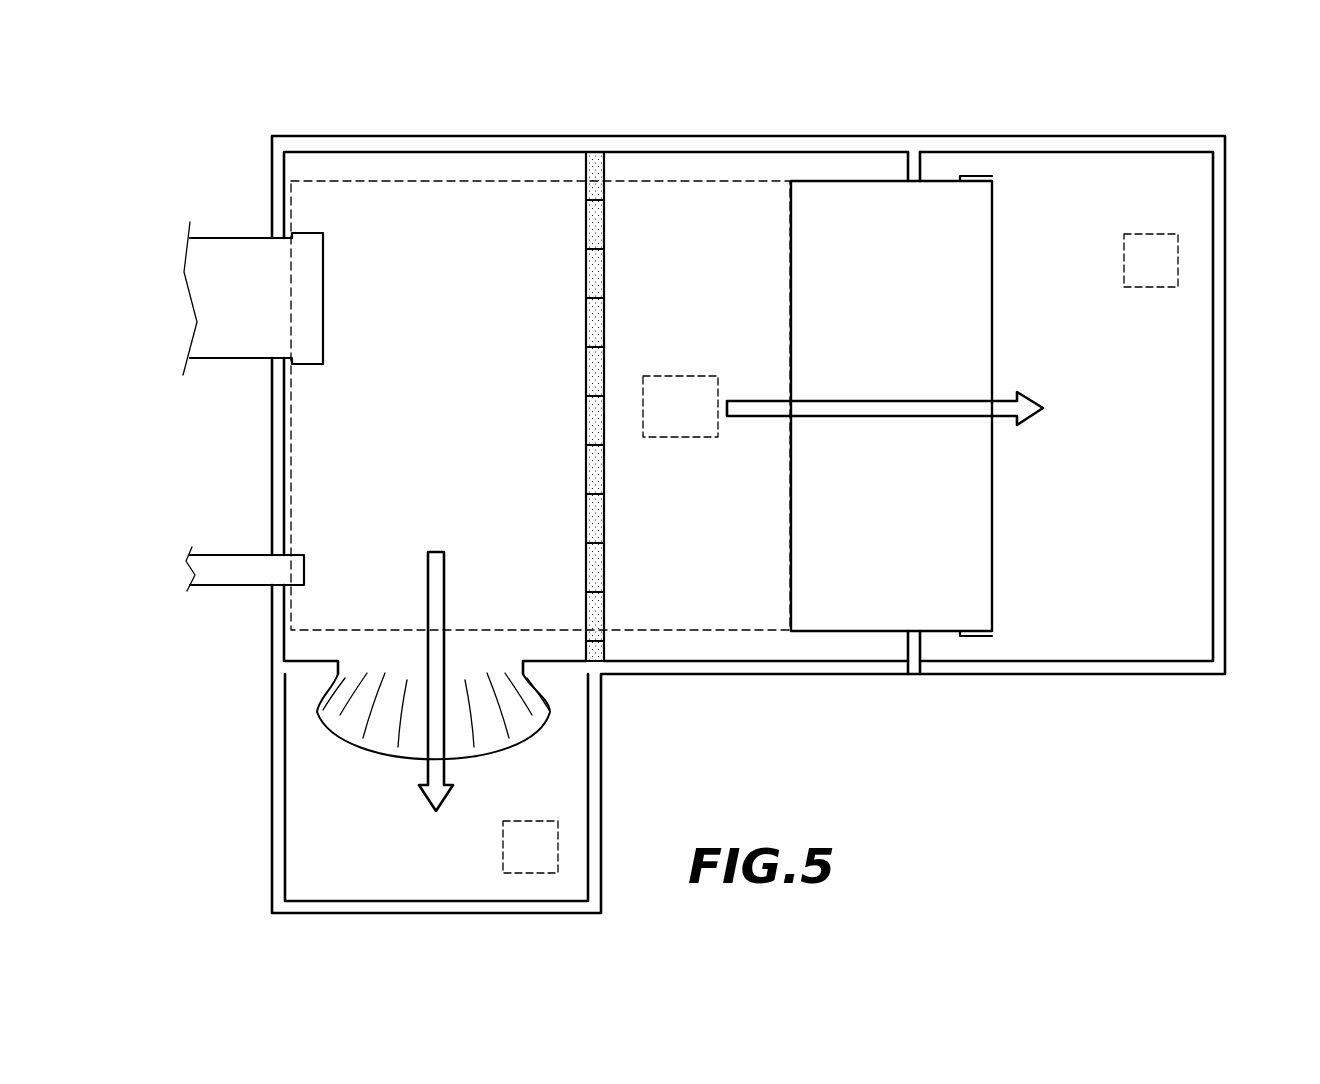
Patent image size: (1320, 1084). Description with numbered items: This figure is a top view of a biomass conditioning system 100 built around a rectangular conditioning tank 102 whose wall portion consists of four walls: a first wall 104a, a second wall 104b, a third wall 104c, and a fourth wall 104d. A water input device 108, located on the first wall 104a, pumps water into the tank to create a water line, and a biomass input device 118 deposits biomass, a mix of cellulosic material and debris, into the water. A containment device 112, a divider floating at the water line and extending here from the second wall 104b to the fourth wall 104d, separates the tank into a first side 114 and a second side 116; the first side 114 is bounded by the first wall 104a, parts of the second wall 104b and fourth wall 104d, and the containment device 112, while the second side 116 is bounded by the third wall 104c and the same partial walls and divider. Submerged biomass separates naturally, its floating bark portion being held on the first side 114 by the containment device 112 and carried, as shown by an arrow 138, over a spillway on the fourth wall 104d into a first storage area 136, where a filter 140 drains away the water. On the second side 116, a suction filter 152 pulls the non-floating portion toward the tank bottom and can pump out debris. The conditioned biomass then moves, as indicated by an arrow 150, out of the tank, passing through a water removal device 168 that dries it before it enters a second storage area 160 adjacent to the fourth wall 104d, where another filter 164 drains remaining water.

The biomass conditioning system 100 is at (221, 118).
The conditioning tank 102 is at (878, 684).
The first wall 104a is at (273, 645).
The second wall 104b is at (596, 139).
The third wall 104c is at (914, 166).
The fourth wall 104d is at (690, 674).
The water input device 108 is at (247, 563).
The containment device 112 is at (597, 469).
The first side 114 is at (477, 270).
The second side 116 is at (737, 271).
The biomass input device 118 is at (253, 252).
The first storage area 136 is at (601, 797).
The arrow 138 is at (445, 583).
The filter 140 is at (503, 847).
The arrow 150 is at (781, 400).
The suction filter 152 is at (678, 390).
The second storage area 160 is at (1188, 600).
The filter 164 is at (1143, 287).
The water removal device 168 is at (983, 583).